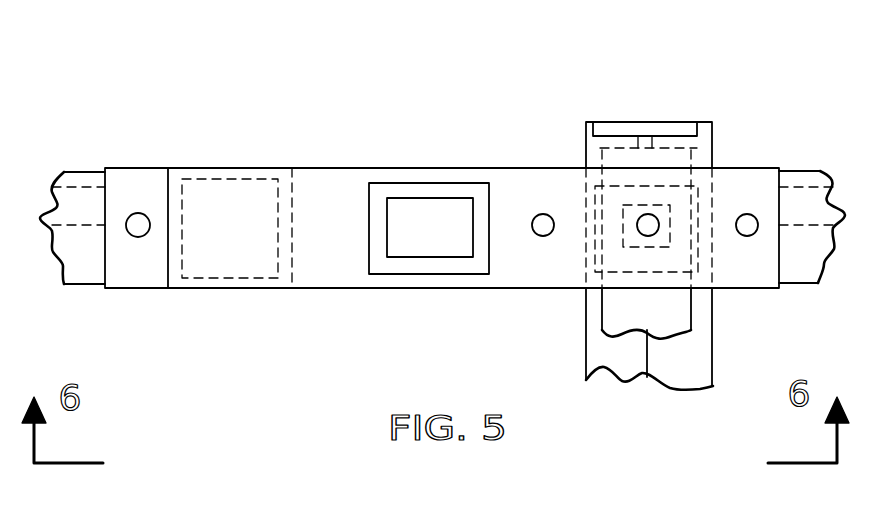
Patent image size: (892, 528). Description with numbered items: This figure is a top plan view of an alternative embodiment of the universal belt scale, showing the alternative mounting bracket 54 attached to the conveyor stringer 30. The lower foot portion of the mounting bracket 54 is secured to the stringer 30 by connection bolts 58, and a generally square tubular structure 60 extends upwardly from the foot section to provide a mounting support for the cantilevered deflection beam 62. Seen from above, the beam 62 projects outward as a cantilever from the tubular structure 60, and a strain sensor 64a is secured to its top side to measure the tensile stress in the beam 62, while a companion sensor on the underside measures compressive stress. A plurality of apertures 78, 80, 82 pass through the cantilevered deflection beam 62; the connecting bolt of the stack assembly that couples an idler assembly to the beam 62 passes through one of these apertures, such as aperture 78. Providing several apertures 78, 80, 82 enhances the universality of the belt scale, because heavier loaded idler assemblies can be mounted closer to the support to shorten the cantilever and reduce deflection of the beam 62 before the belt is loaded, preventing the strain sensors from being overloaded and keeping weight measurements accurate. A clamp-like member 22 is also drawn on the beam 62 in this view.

The mounting bracket 54 is at (133, 63).
The stringer 30 is at (83, 178).
The cantilevered deflection beam 62 is at (343, 180).
The square tubular structure 60 is at (227, 178).
The strain sensor 64a is at (427, 210).
The clamp member 22 is at (697, 148).
The connection bolt 58 is at (143, 233).
The aperture 80 is at (541, 236).
The aperture 78 is at (645, 236).
The aperture 82 is at (743, 236).